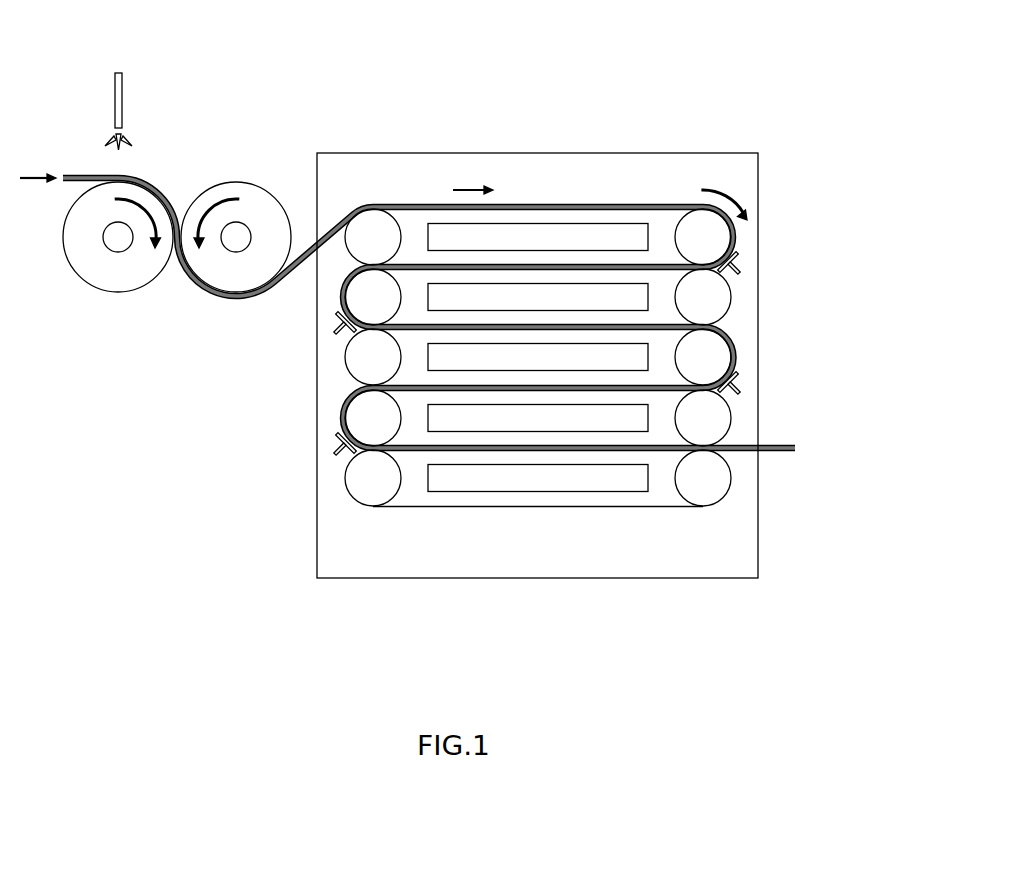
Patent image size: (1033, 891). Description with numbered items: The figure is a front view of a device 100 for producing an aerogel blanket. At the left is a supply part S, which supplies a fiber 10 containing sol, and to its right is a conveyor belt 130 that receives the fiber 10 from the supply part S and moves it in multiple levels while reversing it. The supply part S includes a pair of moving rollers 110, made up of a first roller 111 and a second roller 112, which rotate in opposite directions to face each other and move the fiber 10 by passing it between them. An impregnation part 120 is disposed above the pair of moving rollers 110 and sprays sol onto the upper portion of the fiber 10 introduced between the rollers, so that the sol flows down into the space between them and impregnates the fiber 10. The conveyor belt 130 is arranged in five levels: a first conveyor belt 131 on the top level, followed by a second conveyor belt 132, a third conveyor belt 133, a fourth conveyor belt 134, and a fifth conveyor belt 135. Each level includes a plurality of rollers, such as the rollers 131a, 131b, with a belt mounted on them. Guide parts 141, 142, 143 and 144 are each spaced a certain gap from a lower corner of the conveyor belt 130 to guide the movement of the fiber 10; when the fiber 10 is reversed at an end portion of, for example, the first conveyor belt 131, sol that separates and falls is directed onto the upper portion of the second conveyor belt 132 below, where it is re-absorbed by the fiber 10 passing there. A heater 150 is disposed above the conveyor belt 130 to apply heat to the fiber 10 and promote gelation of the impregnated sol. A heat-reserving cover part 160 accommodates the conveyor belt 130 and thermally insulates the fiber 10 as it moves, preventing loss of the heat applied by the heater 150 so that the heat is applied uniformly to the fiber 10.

The device for producing an aerogel blanket 100 is at (812, 41).
The fiber 10 is at (77, 175).
The pair of moving rollers 110 is at (177, 291).
The first roller 111 is at (118, 273).
The second roller 112 is at (236, 268).
The impregnation part 120 is at (143, 99).
The conveyor belt 130 is at (624, 332).
The first conveyor belt 131 is at (748, 235).
The roller 131a is at (398, 212).
The roller 131b is at (679, 212).
The second conveyor belt 132 is at (748, 295).
The third conveyor belt 133 is at (748, 357).
The fourth conveyor belt 134 is at (748, 417).
The fifth conveyor belt 135 is at (589, 478).
The guide part 141 is at (741, 265).
The guide part 142 is at (337, 327).
The guide part 143 is at (741, 386).
The guide part 144 is at (337, 447).
The heater 150 is at (537, 222).
The heat-reserving cover part 160 is at (537, 153).
The supply part S is at (147, 555).